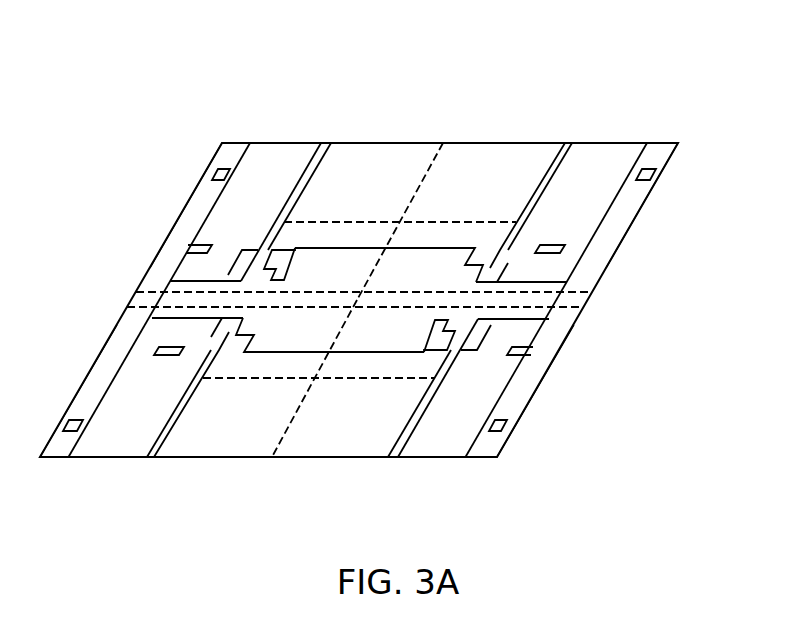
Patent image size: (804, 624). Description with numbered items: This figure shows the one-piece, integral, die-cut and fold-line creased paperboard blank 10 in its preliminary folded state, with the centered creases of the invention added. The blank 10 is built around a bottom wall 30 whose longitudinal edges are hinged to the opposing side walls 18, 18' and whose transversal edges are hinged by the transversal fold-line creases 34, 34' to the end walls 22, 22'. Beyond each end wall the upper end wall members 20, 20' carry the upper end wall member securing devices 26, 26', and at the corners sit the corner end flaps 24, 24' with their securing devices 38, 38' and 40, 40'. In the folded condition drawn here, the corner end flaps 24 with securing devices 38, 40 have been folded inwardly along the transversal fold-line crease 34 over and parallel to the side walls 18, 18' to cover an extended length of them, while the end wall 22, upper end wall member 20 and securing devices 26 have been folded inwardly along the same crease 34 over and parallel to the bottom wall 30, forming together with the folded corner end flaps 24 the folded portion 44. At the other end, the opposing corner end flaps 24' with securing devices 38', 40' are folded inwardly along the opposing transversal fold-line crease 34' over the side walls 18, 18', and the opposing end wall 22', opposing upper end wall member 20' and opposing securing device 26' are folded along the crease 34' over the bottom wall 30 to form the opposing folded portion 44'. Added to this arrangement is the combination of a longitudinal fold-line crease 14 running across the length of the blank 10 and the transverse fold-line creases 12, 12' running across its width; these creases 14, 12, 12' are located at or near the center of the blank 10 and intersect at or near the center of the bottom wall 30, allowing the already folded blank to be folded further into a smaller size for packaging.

The paperboard blank 10 is at (726, 320).
The transverse fold-line crease 12 is at (358, 391).
The transverse fold-line crease 12' is at (417, 215).
The longitudinal fold-line crease 14 is at (428, 152).
The side wall 18 is at (401, 307).
The opposing side wall 18' is at (315, 284).
The upper end wall member 20 is at (314, 409).
The opposing upper end wall member 20' is at (423, 194).
The end wall 22 is at (319, 398).
The opposing end wall 22' is at (400, 196).
The corner end flap 24 is at (339, 361).
The opposing corner end flap 24' is at (382, 233).
The upper end wall member securing device 26 is at (319, 421).
The opposing upper end wall member securing device 26' is at (400, 185).
The bottom wall 30 is at (323, 279).
The transversal fold-line crease 34 is at (268, 490).
The opposing transversal fold-line crease 34' is at (450, 100).
The securing device 38 is at (571, 371).
The opposing securing device 38' is at (160, 226).
The securing device 40 is at (104, 361).
The opposing securing device 40' is at (609, 226).
The folded portion 44 is at (398, 488).
The opposing folded portion 44' is at (331, 84).